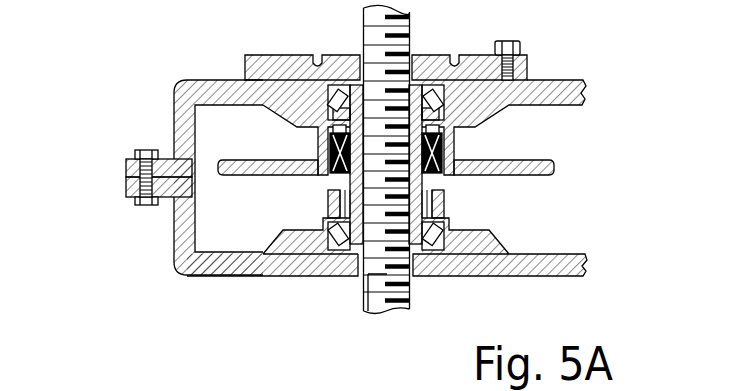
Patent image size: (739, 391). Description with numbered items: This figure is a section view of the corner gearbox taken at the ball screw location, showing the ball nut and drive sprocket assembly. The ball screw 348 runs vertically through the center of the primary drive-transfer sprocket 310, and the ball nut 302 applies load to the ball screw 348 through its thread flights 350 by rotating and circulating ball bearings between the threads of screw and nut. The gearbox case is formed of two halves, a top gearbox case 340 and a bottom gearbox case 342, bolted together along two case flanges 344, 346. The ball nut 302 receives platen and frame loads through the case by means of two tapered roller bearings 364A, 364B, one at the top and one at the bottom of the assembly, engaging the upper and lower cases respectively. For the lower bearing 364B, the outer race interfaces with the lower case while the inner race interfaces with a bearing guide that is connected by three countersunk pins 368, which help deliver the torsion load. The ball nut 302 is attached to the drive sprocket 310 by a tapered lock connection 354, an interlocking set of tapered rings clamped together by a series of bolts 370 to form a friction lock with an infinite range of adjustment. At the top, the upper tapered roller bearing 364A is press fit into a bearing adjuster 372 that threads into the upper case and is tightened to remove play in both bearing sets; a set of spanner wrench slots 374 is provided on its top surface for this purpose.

The ball nut 302 is at (323, 185).
The primary drive-transfer sprocket 310 is at (245, 158).
The top gearbox case 340 is at (212, 80).
The bottom gearbox case 342 is at (227, 277).
The case flange 344 is at (125, 167).
The case flange 346 is at (125, 183).
The ball screw 348 is at (400, 312).
The thread flights 350 is at (368, 278).
The tapered lock connection 354 is at (330, 150).
The upper tapered roller bearing 364A is at (340, 88).
The lower tapered roller bearing 364B is at (335, 250).
The countersunk pins 368 is at (330, 203).
The bolts 370 is at (458, 126).
The bearing adjuster 372 is at (508, 40).
The spanner wrench slots 374 is at (316, 58).